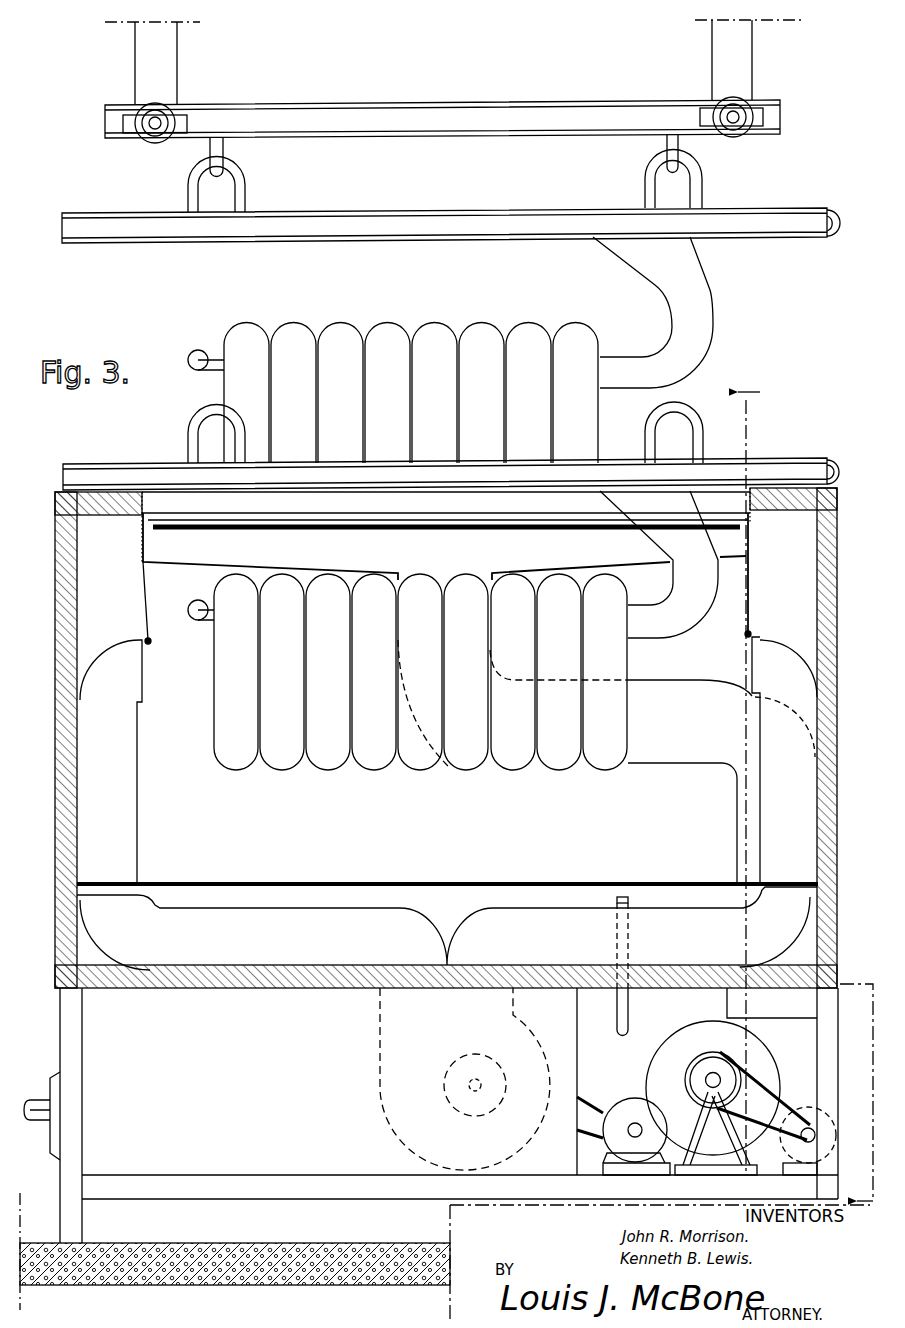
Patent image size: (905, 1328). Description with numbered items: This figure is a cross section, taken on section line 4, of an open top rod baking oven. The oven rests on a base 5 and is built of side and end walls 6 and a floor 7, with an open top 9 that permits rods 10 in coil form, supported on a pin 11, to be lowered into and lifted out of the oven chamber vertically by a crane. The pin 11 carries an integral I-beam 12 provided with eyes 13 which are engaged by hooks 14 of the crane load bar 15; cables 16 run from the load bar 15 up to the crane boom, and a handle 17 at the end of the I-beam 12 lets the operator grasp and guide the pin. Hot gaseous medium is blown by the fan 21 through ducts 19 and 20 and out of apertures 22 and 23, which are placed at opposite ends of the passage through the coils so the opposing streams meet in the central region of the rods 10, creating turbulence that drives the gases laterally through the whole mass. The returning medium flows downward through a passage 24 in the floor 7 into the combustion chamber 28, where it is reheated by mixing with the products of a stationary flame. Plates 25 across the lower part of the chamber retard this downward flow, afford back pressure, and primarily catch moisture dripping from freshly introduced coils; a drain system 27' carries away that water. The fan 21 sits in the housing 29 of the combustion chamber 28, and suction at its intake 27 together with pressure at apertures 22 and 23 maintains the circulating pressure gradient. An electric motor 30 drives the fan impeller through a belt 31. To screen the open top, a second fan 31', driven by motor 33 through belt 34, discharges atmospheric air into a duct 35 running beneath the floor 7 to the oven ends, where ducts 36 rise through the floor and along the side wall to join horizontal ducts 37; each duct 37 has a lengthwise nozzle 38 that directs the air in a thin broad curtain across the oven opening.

The section line 4 is at (815, 789).
The base 5 is at (82, 1101).
The side and end walls 6 is at (55, 760).
The floor 7 is at (270, 990).
The open top 9 is at (165, 496).
The rods 10 is at (297, 325).
The pin 11 is at (608, 356).
The I-beam 12 is at (790, 240).
The eyes 13 is at (702, 182).
The hooks 14 is at (225, 150).
The load bar 15 is at (371, 141).
The cables 16 is at (178, 75).
The handle 17 is at (843, 222).
The duct 19 is at (137, 803).
The duct 20 is at (775, 636).
The fan 21 is at (378, 1027).
The aperture 22 is at (148, 668).
The aperture 23 is at (752, 660).
The passage 24 is at (186, 956).
The plates 25 is at (343, 879).
The fan intake 27 is at (473, 1068).
The drain system 27' is at (642, 966).
The combustion chamber 28 is at (245, 1163).
The housing 29 is at (577, 1005).
The electric motor 30 is at (623, 1103).
The belt 31 is at (591, 1106).
The fan 31' is at (713, 1077).
The motor 33 is at (800, 1110).
The belt 34 is at (750, 1075).
The duct 35 is at (766, 1012).
The ducts 36 is at (668, 757).
The ducts 37 is at (185, 549).
The nozzle 38 is at (408, 531).